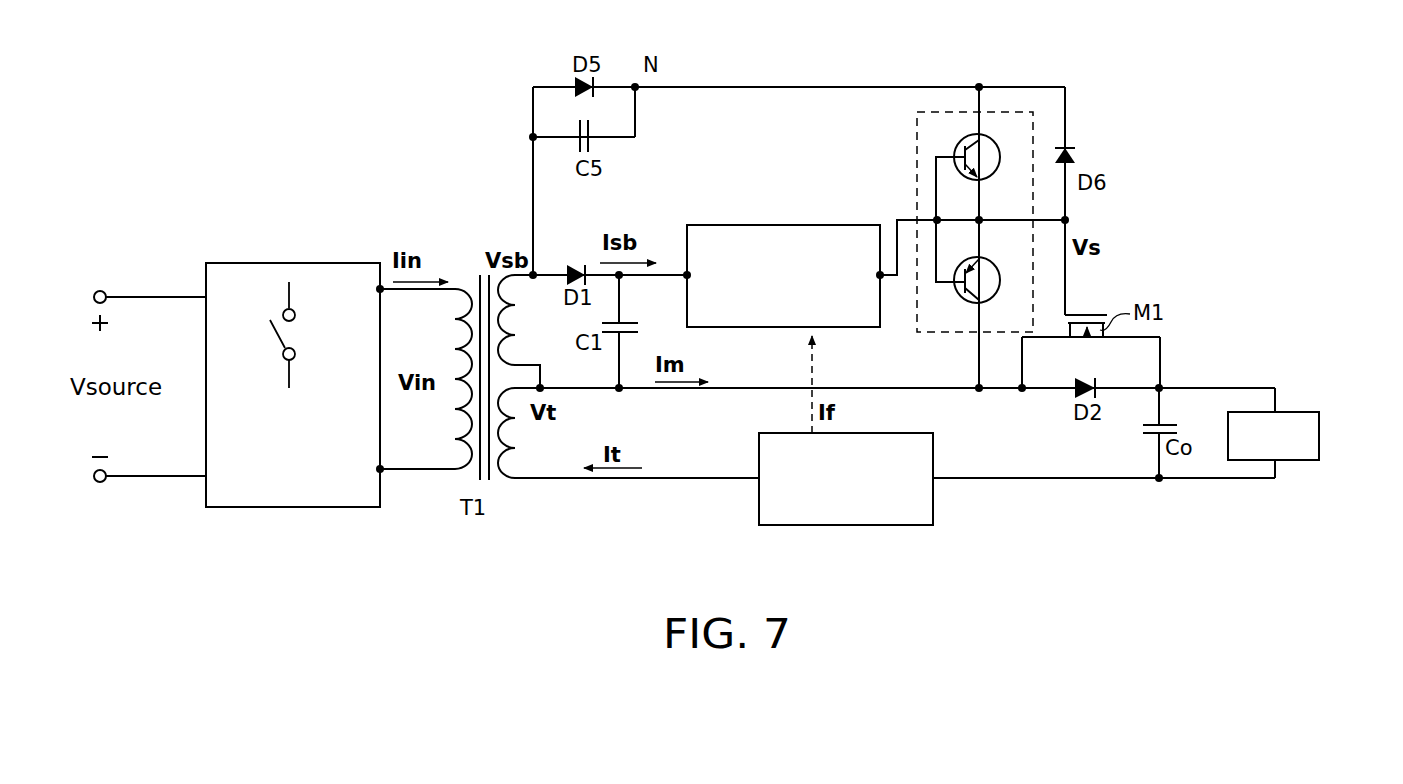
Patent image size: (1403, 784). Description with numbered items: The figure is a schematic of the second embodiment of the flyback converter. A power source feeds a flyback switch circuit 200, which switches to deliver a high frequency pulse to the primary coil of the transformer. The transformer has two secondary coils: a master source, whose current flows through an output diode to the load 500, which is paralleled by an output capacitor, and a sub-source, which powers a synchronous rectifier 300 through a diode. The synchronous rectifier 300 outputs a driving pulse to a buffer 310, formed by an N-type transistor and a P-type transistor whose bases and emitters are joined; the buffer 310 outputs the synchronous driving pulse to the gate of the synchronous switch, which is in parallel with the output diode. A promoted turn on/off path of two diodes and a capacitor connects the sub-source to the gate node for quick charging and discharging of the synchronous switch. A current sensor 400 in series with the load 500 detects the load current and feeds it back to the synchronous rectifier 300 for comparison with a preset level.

The flyback switch circuit 200 is at (265, 277).
The synchronous rectifier 300 is at (768, 243).
The buffer 310 is at (937, 118).
The current sensor 400 is at (922, 513).
The load 500 is at (1305, 425).